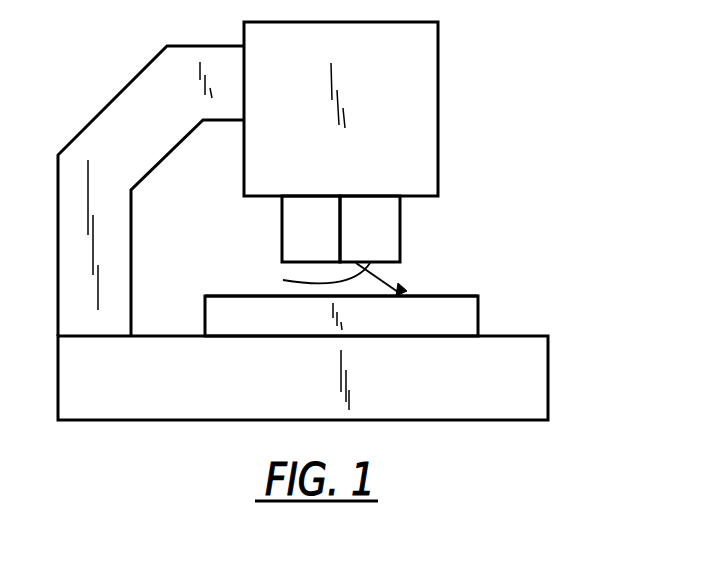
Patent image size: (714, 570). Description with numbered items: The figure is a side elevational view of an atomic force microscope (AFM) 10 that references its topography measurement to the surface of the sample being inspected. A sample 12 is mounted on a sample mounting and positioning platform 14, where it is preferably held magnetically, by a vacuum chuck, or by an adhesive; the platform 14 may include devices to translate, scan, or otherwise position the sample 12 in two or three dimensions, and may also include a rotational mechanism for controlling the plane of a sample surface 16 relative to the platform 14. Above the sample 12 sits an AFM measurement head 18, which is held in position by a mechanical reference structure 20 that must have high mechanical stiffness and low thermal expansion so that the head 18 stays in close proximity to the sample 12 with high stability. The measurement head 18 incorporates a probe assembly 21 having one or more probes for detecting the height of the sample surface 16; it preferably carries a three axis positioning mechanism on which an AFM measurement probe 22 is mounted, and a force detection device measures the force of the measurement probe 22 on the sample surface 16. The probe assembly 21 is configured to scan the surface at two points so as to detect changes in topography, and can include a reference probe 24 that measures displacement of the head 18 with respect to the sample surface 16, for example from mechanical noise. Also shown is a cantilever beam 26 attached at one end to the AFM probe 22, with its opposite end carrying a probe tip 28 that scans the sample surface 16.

The atomic force microscope 10 is at (528, 43).
The sample 12 is at (480, 316).
The sample mounting and positioning platform 14 is at (550, 373).
The sample surface 16 is at (470, 296).
The AFM measurement head 18 is at (438, 120).
The mechanical reference structure 20 is at (120, 90).
The probe assembly 21 is at (424, 241).
The AFM measurement probe 22 is at (417, 270).
The reference probe 24 is at (282, 220).
The cantilever beam 26 is at (309, 279).
The probe tip 28 is at (408, 291).